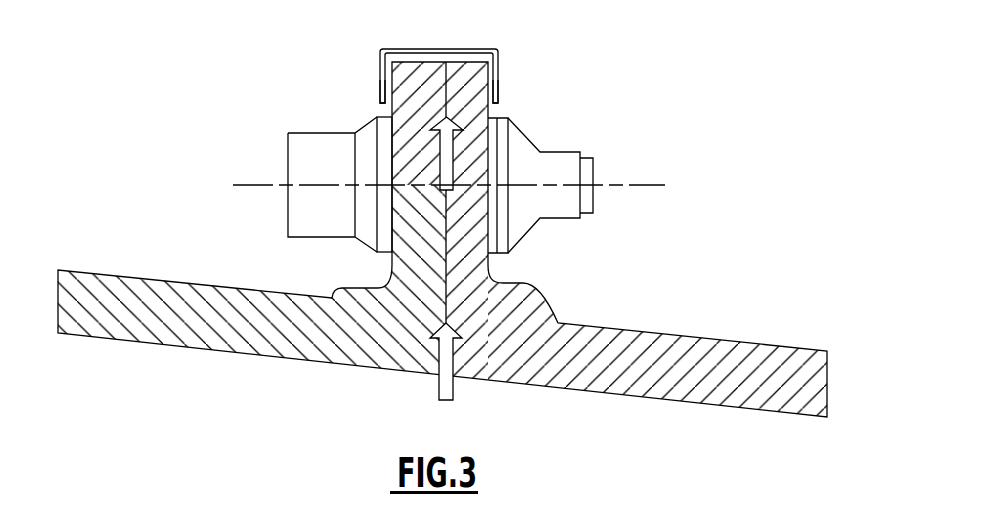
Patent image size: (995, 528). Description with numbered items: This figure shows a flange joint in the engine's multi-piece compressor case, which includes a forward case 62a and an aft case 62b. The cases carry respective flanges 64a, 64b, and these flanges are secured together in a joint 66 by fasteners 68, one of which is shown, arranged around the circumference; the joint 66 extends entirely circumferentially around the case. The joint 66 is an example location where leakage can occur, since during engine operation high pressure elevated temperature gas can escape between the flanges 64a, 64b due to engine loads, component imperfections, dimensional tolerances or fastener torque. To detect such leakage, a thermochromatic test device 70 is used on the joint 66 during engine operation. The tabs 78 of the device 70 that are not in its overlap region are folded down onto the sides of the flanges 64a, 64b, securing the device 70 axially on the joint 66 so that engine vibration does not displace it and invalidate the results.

The forward case 62a is at (107, 300).
The aft case 62b is at (677, 342).
The flange 64a is at (388, 108).
The flange 64b is at (500, 106).
The joint 66 is at (447, 68).
The fastener 68 is at (557, 167).
The thermochromatic test device 70 is at (397, 49).
The tab 78 is at (380, 80).